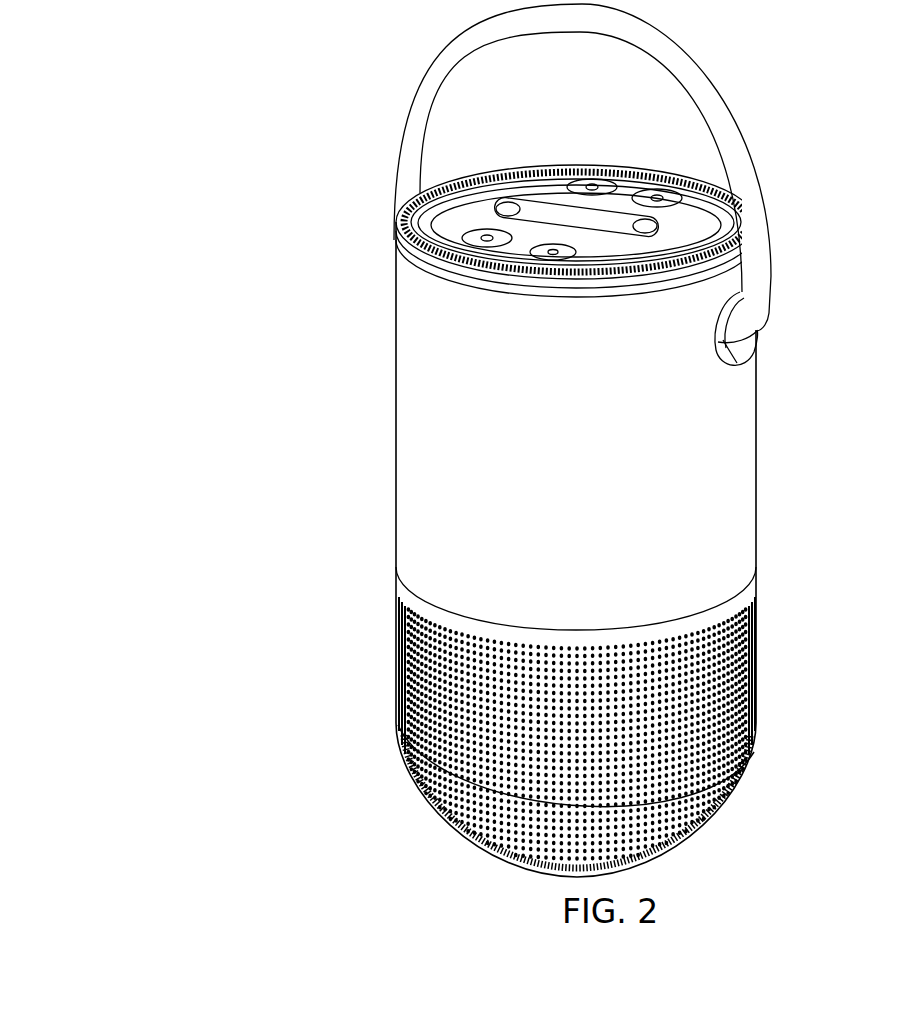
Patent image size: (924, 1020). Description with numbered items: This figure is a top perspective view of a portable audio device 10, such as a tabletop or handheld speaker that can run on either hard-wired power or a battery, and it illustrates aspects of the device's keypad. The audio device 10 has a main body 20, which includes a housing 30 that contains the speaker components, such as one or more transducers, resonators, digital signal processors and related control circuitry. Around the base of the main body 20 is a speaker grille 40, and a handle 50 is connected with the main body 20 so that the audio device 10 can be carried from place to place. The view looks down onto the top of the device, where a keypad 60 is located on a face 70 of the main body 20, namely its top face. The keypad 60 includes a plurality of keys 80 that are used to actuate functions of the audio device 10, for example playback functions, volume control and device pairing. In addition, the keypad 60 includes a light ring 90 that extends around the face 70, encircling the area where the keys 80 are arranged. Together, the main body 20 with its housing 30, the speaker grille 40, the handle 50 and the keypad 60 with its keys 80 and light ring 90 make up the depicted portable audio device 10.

The audio device 10 is at (248, 117).
The main body 20 is at (302, 378).
The housing 30 is at (775, 402).
The speaker grille 40 is at (775, 690).
The handle 50 is at (740, 85).
The keypad 60 is at (613, 256).
The face 70 is at (545, 142).
The keys 80 is at (480, 225).
The light ring 90 is at (393, 220).